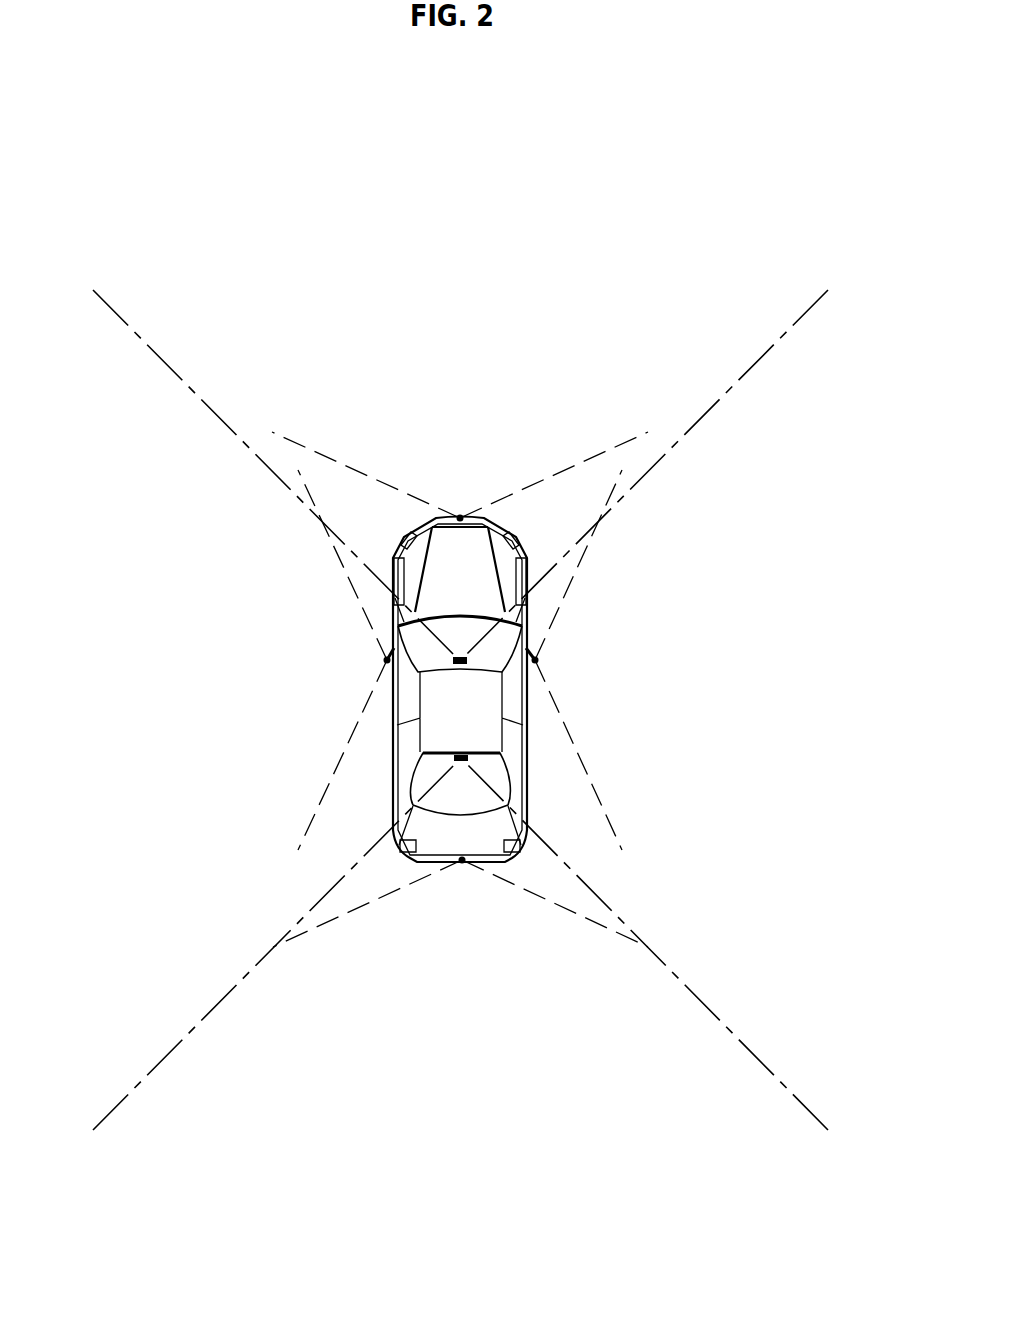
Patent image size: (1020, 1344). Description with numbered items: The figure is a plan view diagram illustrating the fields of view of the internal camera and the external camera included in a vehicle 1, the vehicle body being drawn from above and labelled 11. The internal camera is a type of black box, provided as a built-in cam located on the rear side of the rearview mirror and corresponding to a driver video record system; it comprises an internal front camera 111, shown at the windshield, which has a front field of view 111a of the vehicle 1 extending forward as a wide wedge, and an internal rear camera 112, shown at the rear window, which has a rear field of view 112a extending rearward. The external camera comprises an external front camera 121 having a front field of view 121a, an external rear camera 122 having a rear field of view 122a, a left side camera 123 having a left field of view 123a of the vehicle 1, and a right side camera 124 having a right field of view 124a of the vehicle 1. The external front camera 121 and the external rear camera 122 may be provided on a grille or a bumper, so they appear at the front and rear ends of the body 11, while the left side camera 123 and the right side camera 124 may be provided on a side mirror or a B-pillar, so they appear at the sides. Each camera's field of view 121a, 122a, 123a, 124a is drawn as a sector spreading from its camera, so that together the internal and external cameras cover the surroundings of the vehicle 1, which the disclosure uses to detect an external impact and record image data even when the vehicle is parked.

The vehicle 1 is at (227, 154).
The vehicle 11 is at (507, 763).
The internal front camera 111 is at (460, 668).
The front field of view 111a is at (790, 306).
The internal rear camera 112 is at (461, 763).
The rear field of view 112a is at (791, 1113).
The external front camera 121 is at (455, 518).
The front field of view 121a is at (488, 286).
The external rear camera 122 is at (462, 866).
The rear field of view 122a is at (488, 1093).
The left side camera 123 is at (383, 664).
The left field of view 123a is at (162, 638).
The right side camera 124 is at (539, 664).
The right field of view 124a is at (762, 638).